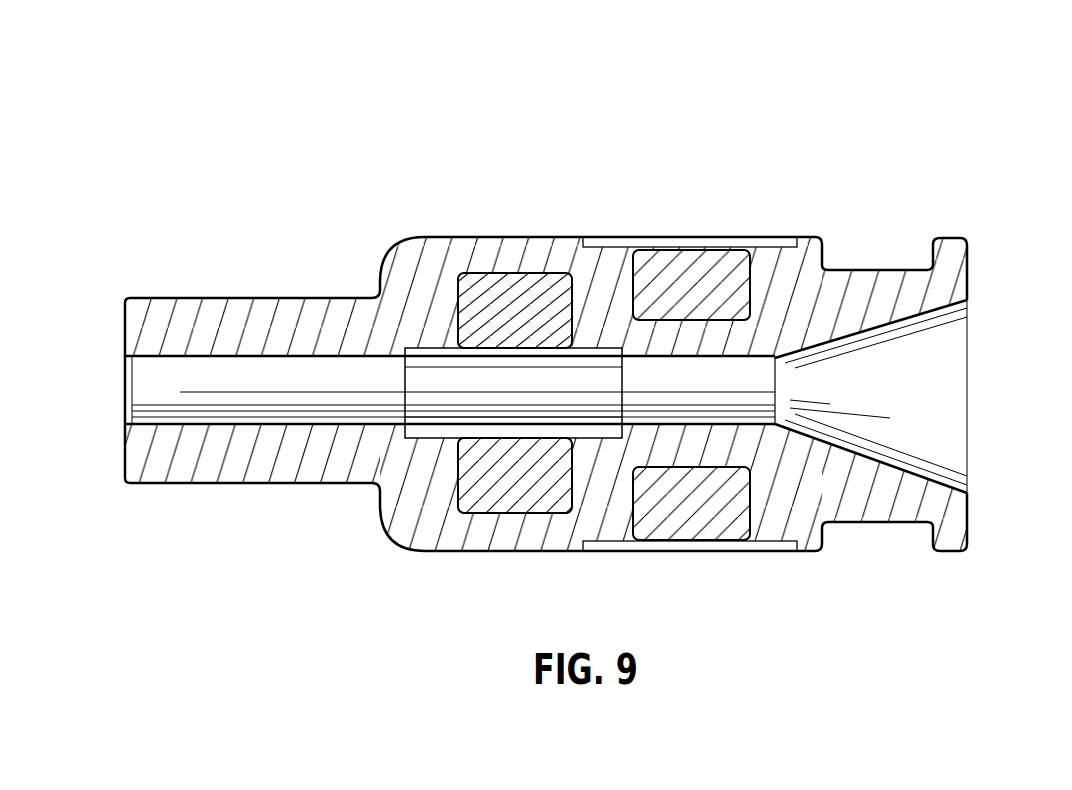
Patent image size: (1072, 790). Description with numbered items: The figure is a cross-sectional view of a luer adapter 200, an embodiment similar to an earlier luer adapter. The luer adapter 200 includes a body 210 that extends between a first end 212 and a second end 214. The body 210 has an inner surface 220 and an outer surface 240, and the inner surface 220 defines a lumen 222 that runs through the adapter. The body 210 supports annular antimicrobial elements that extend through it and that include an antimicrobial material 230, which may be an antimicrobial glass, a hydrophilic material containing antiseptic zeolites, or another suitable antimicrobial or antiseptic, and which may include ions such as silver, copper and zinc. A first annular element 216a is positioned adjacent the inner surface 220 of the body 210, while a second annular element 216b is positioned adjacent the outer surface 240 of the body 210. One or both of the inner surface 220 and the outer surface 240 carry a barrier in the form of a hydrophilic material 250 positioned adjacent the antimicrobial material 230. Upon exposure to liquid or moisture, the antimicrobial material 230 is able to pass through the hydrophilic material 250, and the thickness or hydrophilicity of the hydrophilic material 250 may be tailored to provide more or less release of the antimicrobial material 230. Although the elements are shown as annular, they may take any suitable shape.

The luer adapter 200 is at (573, 118).
The body 210 is at (447, 250).
The first end 212 is at (138, 296).
The second end 214 is at (952, 237).
The first annular element 216a is at (473, 302).
The second annular element 216b is at (713, 283).
The inner surface 220 is at (777, 378).
The lumen 222 is at (928, 431).
The antimicrobial material 230 is at (513, 320).
The outer surface 240 is at (813, 231).
The hydrophilic material 250 is at (594, 243).